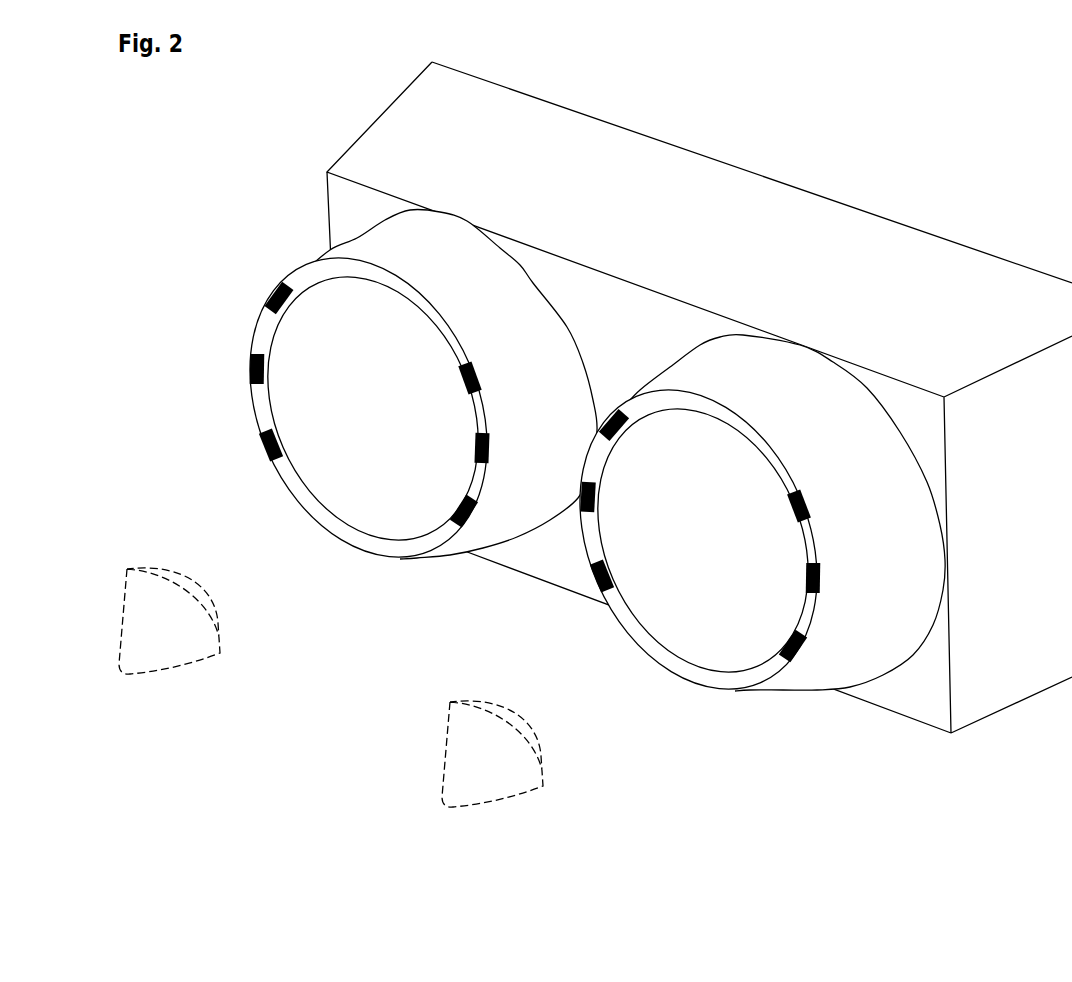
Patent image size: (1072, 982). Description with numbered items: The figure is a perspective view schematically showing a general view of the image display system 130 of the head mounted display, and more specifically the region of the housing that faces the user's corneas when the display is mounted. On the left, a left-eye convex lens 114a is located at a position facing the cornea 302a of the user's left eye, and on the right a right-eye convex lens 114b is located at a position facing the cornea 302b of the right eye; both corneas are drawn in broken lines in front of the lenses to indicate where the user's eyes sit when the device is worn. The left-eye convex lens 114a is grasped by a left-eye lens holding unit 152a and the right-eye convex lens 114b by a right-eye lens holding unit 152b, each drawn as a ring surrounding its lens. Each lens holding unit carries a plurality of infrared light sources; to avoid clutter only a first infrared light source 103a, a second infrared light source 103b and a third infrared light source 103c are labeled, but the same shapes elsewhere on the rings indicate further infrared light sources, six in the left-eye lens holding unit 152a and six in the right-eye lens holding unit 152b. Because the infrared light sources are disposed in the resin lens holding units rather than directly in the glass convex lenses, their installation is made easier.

The image display system 130 is at (763, 192).
The left-eye lens holding unit 152a is at (298, 278).
The right-eye lens holding unit 152b is at (723, 685).
The left-eye convex lens 114a is at (363, 520).
The right-eye convex lens 114b is at (673, 638).
The first infrared light source 103a is at (268, 290).
The second infrared light source 103b is at (247, 366).
The third infrared light source 103c is at (260, 443).
The cornea of the left eye 302a is at (152, 562).
The cornea of the right eye 302b is at (515, 700).